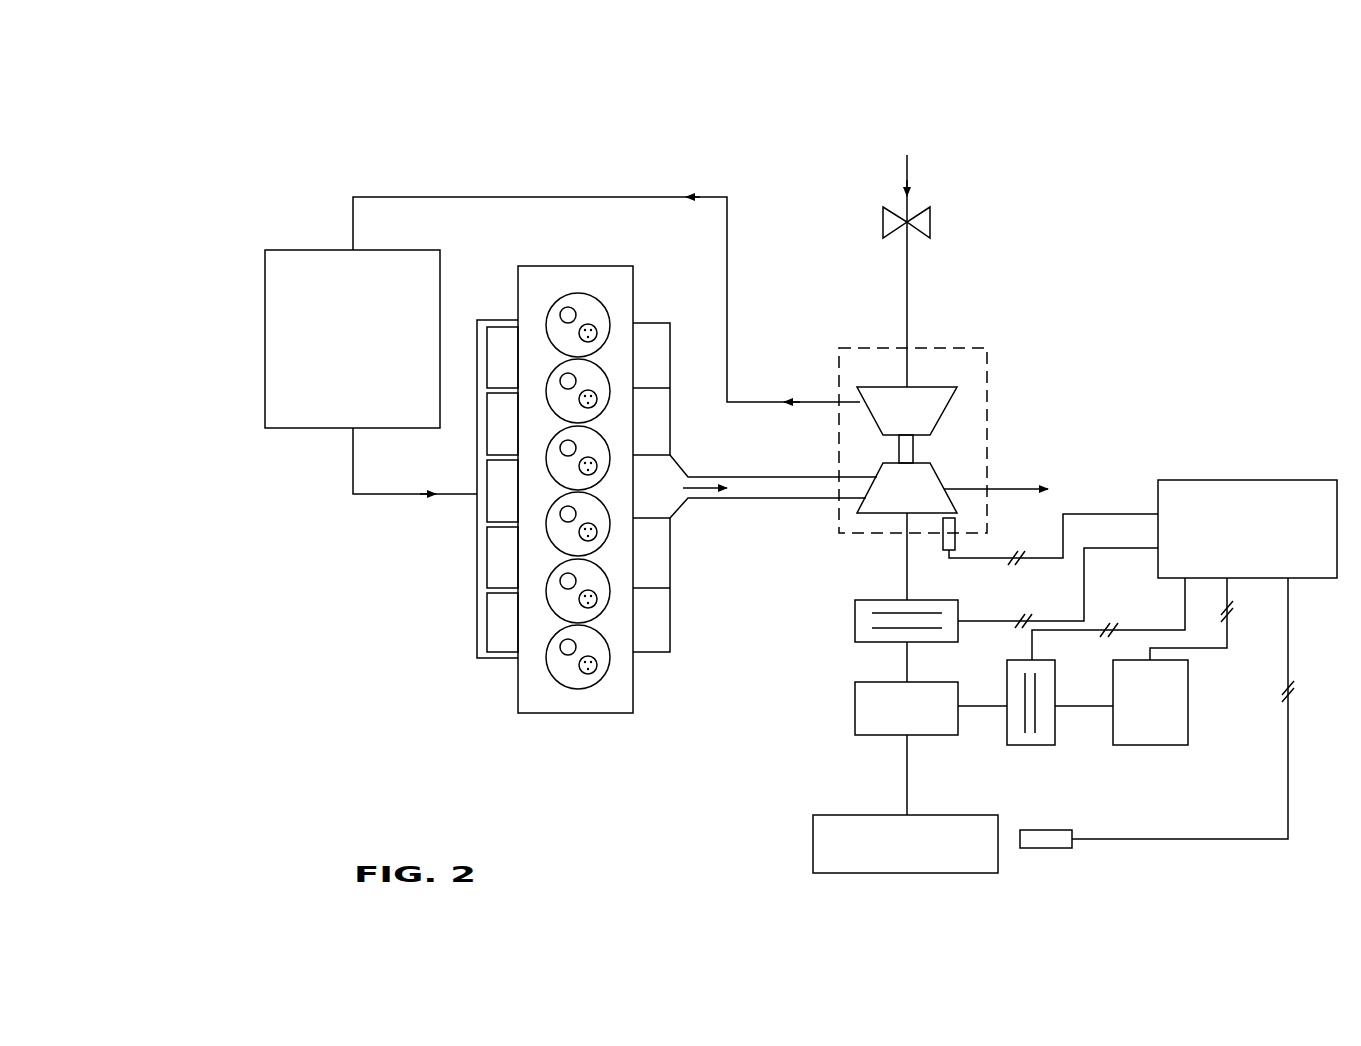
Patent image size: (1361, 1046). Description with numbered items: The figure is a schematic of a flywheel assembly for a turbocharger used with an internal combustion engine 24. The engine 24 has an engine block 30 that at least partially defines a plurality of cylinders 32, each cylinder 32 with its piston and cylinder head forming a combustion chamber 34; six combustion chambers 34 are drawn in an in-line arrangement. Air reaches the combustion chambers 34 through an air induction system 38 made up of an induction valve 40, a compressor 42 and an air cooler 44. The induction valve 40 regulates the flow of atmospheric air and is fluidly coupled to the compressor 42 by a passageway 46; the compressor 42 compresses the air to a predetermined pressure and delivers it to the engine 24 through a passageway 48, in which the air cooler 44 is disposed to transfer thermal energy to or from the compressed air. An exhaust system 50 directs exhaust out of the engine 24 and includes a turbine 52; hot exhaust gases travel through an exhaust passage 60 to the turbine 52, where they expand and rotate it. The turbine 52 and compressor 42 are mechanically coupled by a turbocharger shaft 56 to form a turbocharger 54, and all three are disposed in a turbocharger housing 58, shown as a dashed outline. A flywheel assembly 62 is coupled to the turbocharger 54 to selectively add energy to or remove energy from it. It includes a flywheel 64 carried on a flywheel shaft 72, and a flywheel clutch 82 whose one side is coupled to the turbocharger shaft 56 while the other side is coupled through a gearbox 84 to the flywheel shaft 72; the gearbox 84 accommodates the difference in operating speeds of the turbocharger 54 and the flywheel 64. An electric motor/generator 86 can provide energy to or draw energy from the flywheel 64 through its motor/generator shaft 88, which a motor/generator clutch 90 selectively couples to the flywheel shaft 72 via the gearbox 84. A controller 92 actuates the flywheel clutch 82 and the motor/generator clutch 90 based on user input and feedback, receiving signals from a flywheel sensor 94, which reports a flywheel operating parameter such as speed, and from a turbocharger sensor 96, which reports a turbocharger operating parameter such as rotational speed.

The engine 24 is at (432, 122).
The engine block 30 is at (603, 713).
The cylinder 32 is at (572, 662).
The combustion chamber 34 is at (602, 653).
The air induction system 38 is at (433, 523).
The induction valve 40 is at (930, 222).
The compressor 42 is at (862, 387).
The air cooler 44 is at (283, 377).
The passageway 46 is at (907, 293).
The passageway 48 is at (728, 252).
The exhaust system 50 is at (697, 526).
The turbine 52 is at (857, 512).
The turbocharger 54 is at (899, 427).
The turbocharger shaft 56 is at (913, 448).
The turbocharger housing 58 is at (933, 348).
The exhaust passage 60 is at (735, 477).
The flywheel assembly 62 is at (748, 818).
The flywheel 64 is at (935, 873).
The flywheel shaft 72 is at (907, 770).
The flywheel clutch 82 is at (855, 617).
The gearbox 84 is at (855, 707).
The electric motor/generator 86 is at (1140, 727).
The motor/generator shaft 88 is at (1088, 706).
The motor/generator clutch 90 is at (1017, 753).
The controller 92 is at (1193, 495).
The flywheel sensor 94 is at (1037, 850).
The turbocharger sensor 96 is at (957, 540).